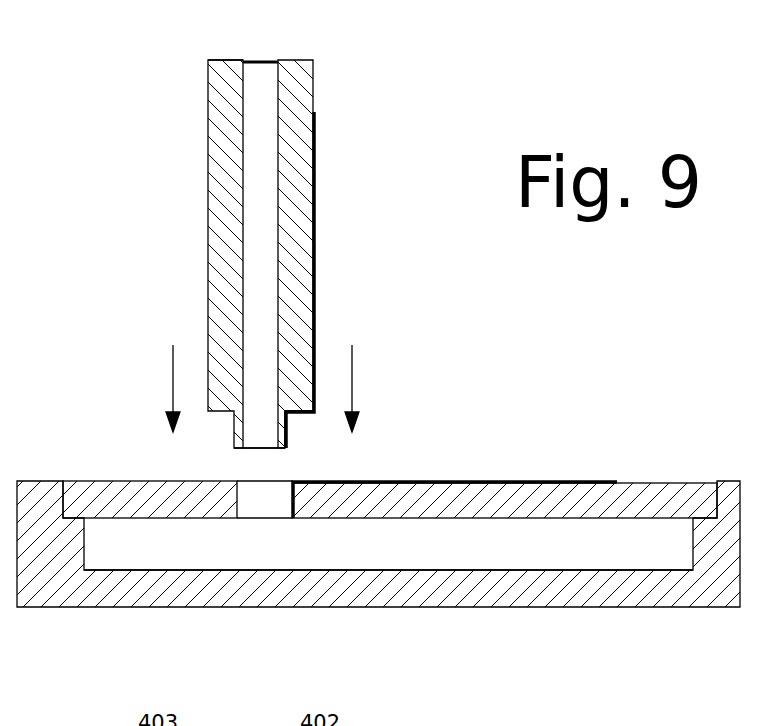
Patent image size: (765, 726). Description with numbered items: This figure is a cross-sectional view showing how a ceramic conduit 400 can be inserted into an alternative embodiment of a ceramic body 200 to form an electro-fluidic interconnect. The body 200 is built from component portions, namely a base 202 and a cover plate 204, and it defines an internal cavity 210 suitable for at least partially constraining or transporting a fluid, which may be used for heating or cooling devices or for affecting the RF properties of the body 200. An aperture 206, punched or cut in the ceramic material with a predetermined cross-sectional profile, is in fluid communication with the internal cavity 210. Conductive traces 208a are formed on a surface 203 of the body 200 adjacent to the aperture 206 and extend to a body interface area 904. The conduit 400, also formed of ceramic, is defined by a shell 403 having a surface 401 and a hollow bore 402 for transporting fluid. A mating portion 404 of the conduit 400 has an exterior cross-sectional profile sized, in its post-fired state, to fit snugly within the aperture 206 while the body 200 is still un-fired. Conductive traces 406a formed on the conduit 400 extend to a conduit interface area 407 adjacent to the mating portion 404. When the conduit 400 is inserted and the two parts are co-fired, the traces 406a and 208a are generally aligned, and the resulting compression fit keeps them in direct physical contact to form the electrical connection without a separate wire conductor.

The body 200 is at (378, 562).
The base 202 is at (604, 607).
The surface 203 is at (667, 482).
The cover plate 204 is at (107, 482).
The aperture 206 is at (237, 516).
The conductive traces 208a is at (505, 482).
The internal cavity 210 is at (576, 557).
The body interface area 904 is at (292, 497).
The conduit 400 is at (256, 247).
The surface 401 is at (313, 91).
The hollow bore 402 is at (272, 72).
The shell 403 is at (224, 61).
The mating portion 404 is at (234, 436).
The conductive traces 406a is at (313, 241).
The conduit interface area 407 is at (312, 441).